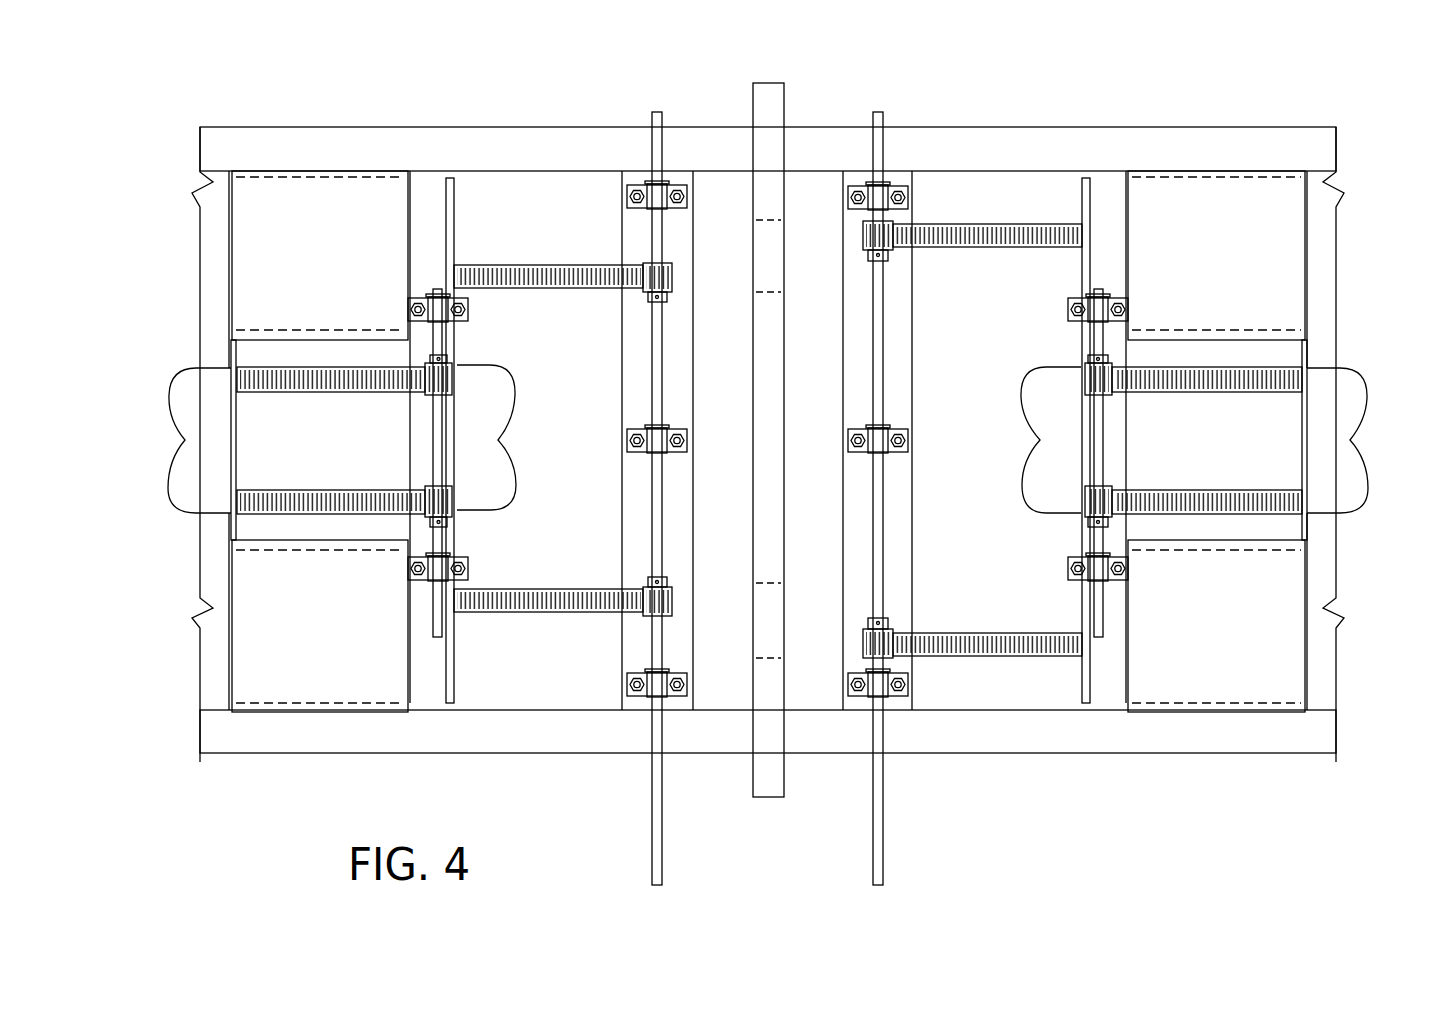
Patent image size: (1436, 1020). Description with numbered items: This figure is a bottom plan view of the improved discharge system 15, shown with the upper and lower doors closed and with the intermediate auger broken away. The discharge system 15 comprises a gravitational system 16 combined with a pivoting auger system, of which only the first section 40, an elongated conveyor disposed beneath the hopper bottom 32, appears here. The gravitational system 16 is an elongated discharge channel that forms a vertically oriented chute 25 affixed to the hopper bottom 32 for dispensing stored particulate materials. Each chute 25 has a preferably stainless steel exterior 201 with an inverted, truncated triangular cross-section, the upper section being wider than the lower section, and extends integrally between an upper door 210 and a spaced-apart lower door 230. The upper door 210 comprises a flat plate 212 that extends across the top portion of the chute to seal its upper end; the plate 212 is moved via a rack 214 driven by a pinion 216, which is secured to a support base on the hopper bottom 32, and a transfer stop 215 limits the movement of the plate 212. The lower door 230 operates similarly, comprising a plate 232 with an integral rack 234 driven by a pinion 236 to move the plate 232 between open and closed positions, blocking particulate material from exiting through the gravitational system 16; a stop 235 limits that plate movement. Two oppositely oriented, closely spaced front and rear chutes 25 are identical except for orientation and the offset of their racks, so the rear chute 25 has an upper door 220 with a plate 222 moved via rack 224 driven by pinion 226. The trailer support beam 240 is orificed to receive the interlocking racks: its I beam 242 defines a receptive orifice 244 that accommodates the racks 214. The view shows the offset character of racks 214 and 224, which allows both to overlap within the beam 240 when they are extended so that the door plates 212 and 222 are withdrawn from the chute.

The discharge system 15 is at (181, 658).
The gravitational system 16 is at (1197, 740).
The chute 25 is at (316, 550).
The hopper bottom 32 is at (567, 185).
The first section 40 is at (164, 422).
The exterior 201 is at (230, 215).
The upper door 210 is at (505, 192).
The flat plate 212 is at (423, 215).
The rack 214 is at (500, 288).
The transfer stop 215 is at (456, 205).
The pinion 216 is at (662, 125).
The upper door 220 is at (981, 178).
The plate 222 is at (1066, 180).
The rack 224 is at (980, 225).
The pinion 226 is at (884, 118).
The lower door 230 is at (218, 522).
The plate 232 is at (440, 352).
The integral rack 234 is at (275, 385).
The stop 235 is at (228, 352).
The pinion 236 is at (452, 390).
The trailer support beam 240 is at (768, 66).
The I beam 242 is at (777, 122).
The receptive orifice 244 is at (778, 232).